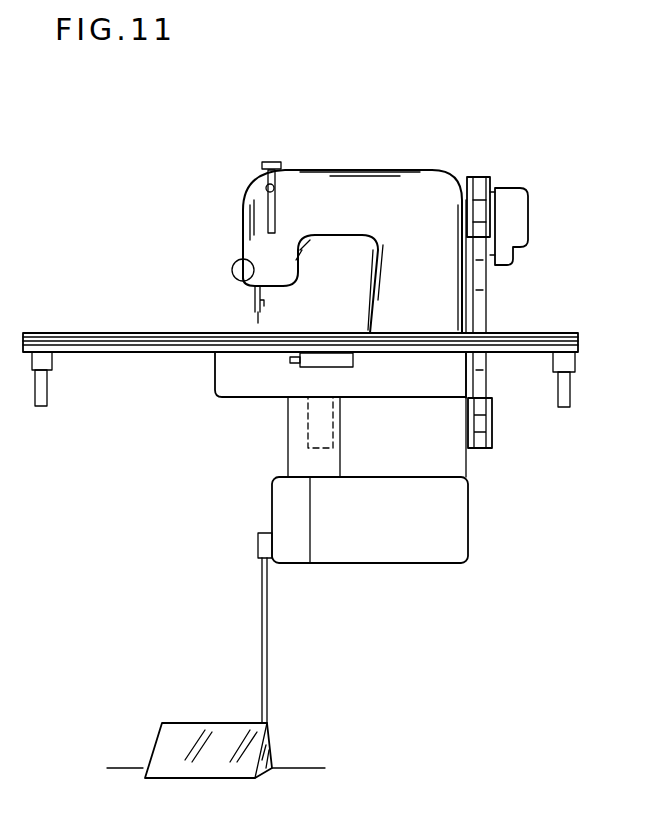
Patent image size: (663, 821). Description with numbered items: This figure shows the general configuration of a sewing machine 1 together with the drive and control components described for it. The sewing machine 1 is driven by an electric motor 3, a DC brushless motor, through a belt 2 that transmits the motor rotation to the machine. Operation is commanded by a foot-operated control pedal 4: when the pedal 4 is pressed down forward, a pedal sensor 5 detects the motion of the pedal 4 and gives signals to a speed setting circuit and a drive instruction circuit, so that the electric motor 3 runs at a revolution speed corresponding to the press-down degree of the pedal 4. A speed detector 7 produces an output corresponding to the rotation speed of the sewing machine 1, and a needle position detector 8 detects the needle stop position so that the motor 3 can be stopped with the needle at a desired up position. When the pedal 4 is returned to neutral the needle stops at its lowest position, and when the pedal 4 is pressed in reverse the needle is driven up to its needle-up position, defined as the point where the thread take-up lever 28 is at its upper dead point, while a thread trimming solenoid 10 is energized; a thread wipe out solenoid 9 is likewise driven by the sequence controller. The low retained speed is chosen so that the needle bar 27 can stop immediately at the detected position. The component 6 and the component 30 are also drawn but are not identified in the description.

The sewing machine 1 is at (341, 169).
The belt 2 is at (487, 310).
The electric motor 3 is at (450, 462).
The control pedal 4 is at (172, 730).
The pedal sensor 5 is at (282, 542).
The motor 6 is at (457, 530).
The speed detector 7 is at (305, 436).
The needle position detector 8 is at (512, 190).
The thread wipe out solenoid 9 is at (233, 263).
The thread trimming solenoid 10 is at (300, 366).
The needle bar 27 is at (263, 292).
The thread take-up lever 28 is at (250, 190).
The table 30 is at (225, 333).